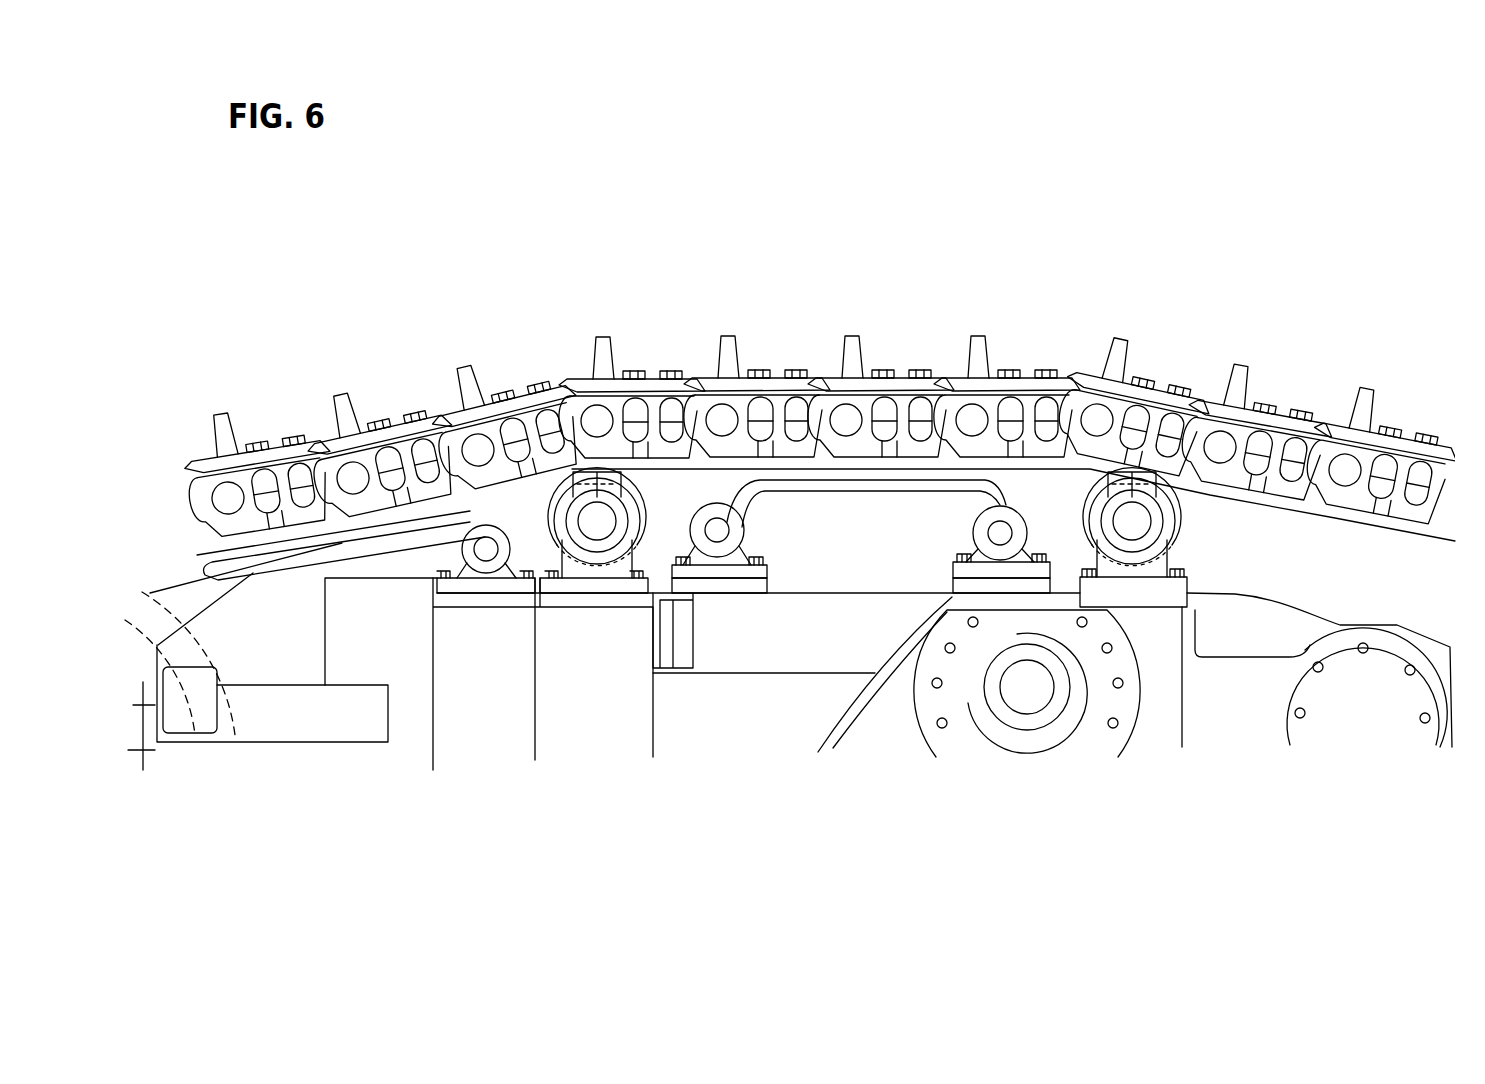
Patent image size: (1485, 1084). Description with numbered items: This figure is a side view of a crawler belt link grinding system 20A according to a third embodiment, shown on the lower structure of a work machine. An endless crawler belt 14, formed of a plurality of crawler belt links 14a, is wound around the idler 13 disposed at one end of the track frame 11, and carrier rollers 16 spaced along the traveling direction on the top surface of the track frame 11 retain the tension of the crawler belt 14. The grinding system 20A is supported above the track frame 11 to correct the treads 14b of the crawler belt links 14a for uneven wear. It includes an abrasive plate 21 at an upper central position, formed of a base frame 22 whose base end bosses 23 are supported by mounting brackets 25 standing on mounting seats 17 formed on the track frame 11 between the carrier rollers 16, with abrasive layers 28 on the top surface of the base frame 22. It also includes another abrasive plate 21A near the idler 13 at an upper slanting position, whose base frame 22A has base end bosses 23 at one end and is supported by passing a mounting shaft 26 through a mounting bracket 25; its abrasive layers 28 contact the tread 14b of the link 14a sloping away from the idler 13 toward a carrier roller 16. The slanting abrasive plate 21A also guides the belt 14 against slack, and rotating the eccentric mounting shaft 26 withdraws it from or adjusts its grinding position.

The crawler belt link grinding system 20A is at (780, 333).
The crawler belt 14 is at (1252, 398).
The crawler belt link 14a is at (931, 405).
The tread 14b is at (528, 497).
The abrasive layer 28 is at (385, 530).
The abrasive plate 21 is at (985, 470).
The abrasive plate 21A is at (387, 512).
The base frame 22 is at (814, 490).
The base frame 22A is at (333, 560).
The mounting shaft 26 is at (486, 550).
The carrier roller 16 is at (1182, 523).
The mounting seat 17 is at (740, 590).
The base end boss 23 is at (543, 669).
The mounting bracket 25 is at (492, 568).
The track frame 11 is at (853, 640).
The idler 13 is at (145, 750).